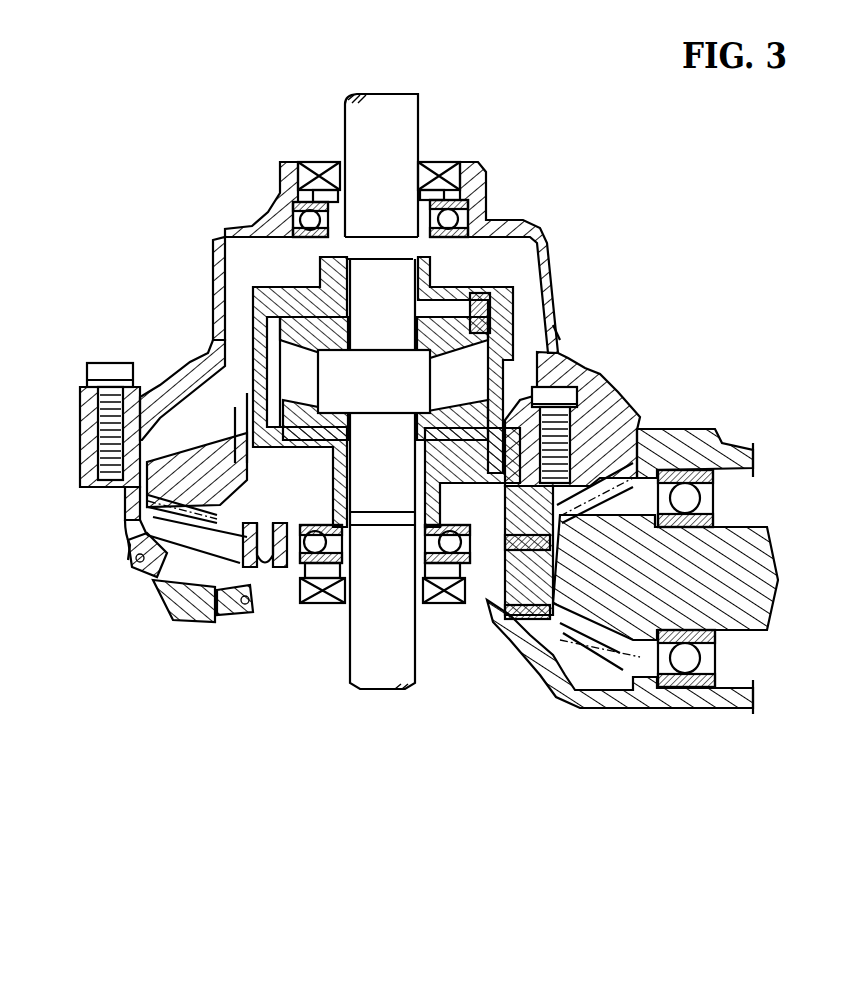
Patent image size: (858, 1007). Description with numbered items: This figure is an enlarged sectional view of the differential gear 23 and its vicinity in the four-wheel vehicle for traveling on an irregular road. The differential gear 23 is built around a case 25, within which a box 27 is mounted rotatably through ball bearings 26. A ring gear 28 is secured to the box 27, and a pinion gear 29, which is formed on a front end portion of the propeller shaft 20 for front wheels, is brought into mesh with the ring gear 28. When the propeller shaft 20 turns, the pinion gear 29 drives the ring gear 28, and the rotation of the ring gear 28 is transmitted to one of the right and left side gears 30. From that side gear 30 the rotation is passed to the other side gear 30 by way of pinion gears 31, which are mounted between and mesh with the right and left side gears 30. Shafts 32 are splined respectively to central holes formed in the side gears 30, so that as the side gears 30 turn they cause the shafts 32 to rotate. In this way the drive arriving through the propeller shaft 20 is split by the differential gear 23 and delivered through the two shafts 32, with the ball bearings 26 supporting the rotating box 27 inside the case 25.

The propeller shaft for front wheels 20 is at (760, 580).
The differential gear 23 is at (563, 200).
The case 25 is at (218, 325).
The ball bearings 26 is at (293, 208).
The box 27 is at (293, 297).
The ring gear 28 is at (600, 462).
The pinion gear 29 is at (583, 648).
The side gears 30 is at (500, 287).
The pinion gears 31 is at (292, 368).
The shafts 32 is at (357, 142).